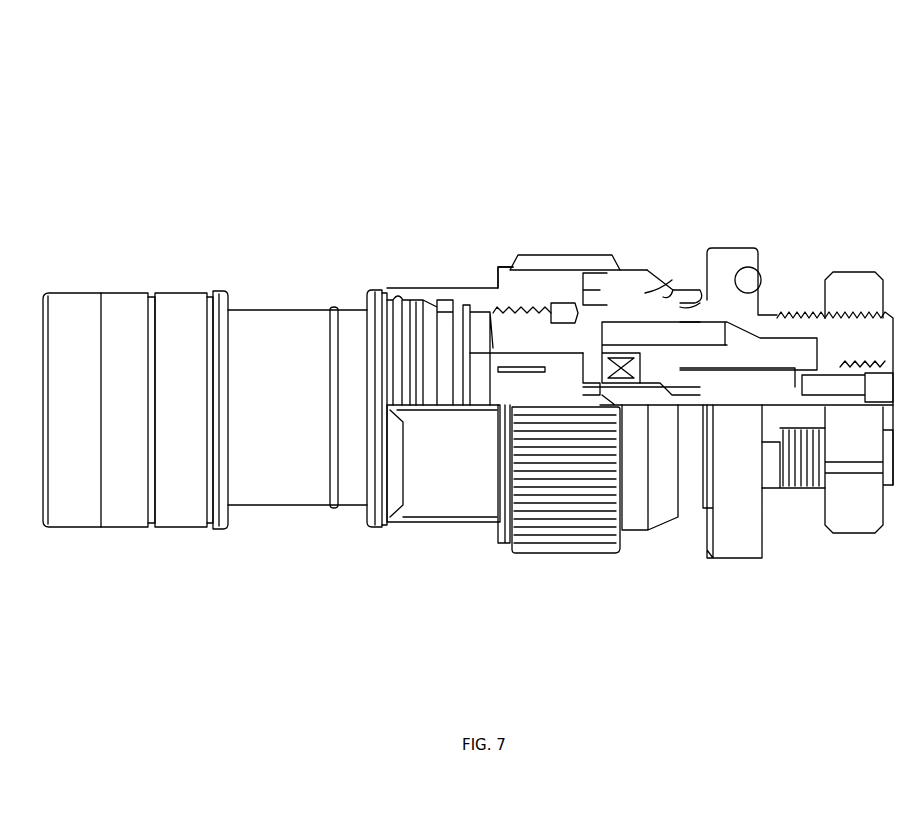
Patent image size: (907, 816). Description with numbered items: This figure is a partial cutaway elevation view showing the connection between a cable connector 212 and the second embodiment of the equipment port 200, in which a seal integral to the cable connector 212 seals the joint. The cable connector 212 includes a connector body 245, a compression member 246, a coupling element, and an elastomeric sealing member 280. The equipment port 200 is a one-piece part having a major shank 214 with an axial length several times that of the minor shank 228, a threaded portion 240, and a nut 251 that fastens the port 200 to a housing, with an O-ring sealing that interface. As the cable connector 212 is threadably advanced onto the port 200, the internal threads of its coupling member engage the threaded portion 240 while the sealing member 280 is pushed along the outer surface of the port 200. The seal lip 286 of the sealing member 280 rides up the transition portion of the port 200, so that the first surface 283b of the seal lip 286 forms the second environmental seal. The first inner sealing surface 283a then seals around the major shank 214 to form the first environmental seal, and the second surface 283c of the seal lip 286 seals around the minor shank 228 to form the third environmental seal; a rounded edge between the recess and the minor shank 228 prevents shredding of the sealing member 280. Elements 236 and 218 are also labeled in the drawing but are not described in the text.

The equipment port 200 is at (205, 97).
The compression member 246 is at (80, 297).
The cable connector 212 is at (192, 266).
The connector body 245 is at (278, 327).
The threaded portion 240 is at (503, 327).
The cap 236 is at (536, 280).
The nut 251 is at (607, 305).
The seal lip 286 is at (590, 300).
The sealing member 280 is at (625, 300).
The major shank 214 is at (695, 300).
The first inner sealing surface 283a is at (703, 307).
The first surface of the seal lip 283b is at (668, 275).
The second surface of the seal lip 283c is at (672, 278).
The flange 218 is at (665, 298).
The minor shank 228 is at (655, 293).